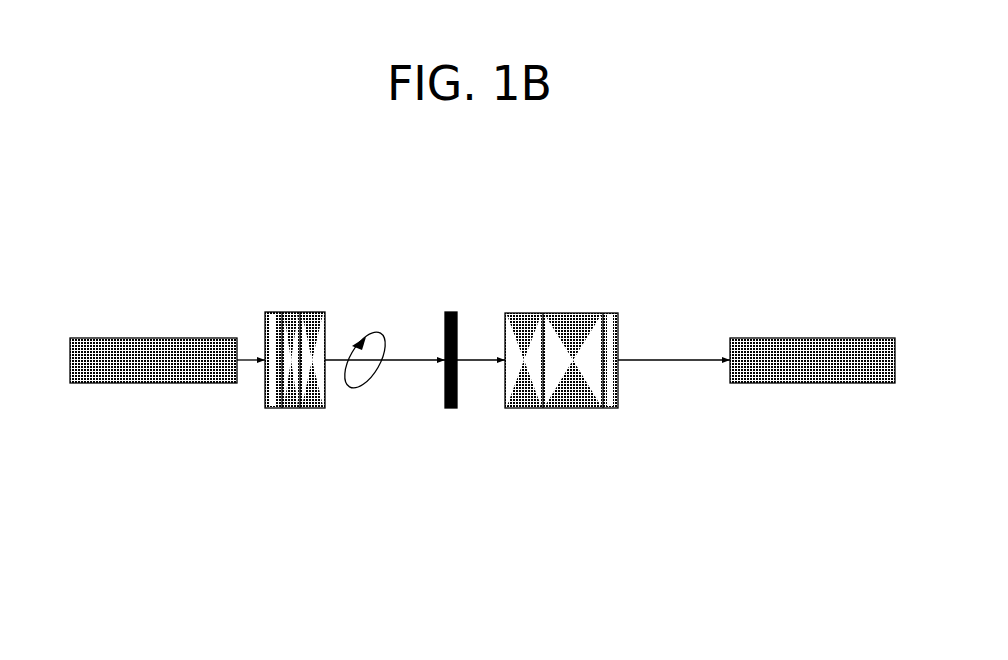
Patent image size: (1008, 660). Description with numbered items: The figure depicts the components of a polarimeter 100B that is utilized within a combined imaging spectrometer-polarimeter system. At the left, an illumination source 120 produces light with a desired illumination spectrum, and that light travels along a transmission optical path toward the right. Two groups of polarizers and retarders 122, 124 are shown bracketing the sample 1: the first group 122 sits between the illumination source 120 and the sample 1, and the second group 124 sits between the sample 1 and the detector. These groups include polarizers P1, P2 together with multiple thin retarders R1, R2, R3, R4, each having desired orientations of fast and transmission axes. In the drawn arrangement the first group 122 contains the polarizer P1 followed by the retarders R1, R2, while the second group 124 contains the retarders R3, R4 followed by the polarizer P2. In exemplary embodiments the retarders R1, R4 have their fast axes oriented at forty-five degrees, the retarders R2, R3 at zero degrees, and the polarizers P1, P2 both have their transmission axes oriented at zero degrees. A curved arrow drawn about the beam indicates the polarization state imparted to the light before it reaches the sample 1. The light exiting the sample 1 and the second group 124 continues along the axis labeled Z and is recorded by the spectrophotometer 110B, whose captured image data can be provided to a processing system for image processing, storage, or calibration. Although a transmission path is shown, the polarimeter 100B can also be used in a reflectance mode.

The polarimeter 100B is at (175, 242).
The illumination source 120 is at (192, 385).
The group of polarizers and retarders 122 is at (294, 377).
The sample 1 is at (450, 408).
The group of polarizers and retarders 124 is at (564, 388).
The output beam / propagation axis Z is at (675, 360).
The spectrophotometer 110B is at (813, 382).
The polarizer P1 is at (273, 343).
The retarder R1 is at (291, 343).
The retarder R2 is at (311, 343).
The retarder R3 is at (524, 345).
The retarder R4 is at (573, 345).
The polarizer P2 is at (613, 345).